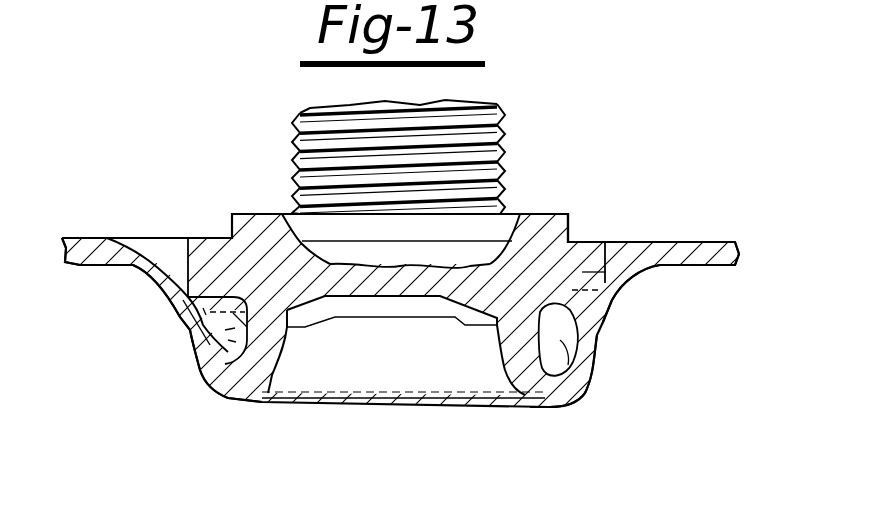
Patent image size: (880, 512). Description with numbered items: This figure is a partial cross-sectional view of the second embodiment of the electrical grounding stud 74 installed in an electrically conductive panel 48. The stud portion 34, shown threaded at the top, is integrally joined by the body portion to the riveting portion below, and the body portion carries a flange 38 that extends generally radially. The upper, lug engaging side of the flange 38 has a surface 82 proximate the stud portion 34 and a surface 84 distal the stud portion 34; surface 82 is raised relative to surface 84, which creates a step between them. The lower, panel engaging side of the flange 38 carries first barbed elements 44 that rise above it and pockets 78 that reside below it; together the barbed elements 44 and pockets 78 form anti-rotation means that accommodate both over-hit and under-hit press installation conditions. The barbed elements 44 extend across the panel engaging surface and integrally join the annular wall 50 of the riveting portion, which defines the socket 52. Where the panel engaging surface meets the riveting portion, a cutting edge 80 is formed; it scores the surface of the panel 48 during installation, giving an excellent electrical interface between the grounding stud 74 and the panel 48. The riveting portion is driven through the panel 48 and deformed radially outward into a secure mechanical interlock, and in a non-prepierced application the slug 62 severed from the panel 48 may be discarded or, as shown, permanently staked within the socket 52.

The stud portion 34 is at (465, 120).
The electrical grounding stud 74 is at (684, 108).
The surface 82 is at (546, 200).
The surface 84 is at (585, 233).
The electrically conductive panel 48 is at (96, 245).
The flange 38 is at (578, 268).
The pockets 78 is at (600, 315).
The first barbed elements 44 is at (202, 317).
The cutting edge 80 is at (210, 352).
The annular wall 50 is at (253, 382).
The socket 52 is at (355, 370).
The slug 62 is at (410, 308).